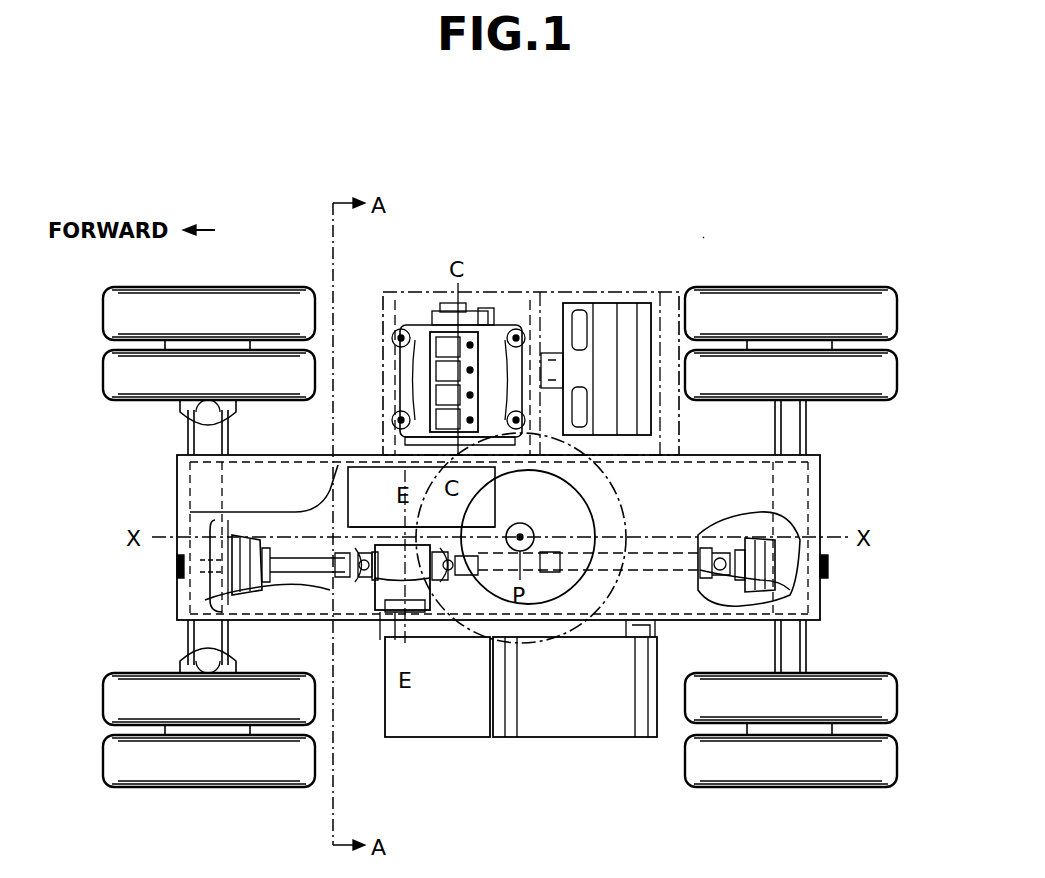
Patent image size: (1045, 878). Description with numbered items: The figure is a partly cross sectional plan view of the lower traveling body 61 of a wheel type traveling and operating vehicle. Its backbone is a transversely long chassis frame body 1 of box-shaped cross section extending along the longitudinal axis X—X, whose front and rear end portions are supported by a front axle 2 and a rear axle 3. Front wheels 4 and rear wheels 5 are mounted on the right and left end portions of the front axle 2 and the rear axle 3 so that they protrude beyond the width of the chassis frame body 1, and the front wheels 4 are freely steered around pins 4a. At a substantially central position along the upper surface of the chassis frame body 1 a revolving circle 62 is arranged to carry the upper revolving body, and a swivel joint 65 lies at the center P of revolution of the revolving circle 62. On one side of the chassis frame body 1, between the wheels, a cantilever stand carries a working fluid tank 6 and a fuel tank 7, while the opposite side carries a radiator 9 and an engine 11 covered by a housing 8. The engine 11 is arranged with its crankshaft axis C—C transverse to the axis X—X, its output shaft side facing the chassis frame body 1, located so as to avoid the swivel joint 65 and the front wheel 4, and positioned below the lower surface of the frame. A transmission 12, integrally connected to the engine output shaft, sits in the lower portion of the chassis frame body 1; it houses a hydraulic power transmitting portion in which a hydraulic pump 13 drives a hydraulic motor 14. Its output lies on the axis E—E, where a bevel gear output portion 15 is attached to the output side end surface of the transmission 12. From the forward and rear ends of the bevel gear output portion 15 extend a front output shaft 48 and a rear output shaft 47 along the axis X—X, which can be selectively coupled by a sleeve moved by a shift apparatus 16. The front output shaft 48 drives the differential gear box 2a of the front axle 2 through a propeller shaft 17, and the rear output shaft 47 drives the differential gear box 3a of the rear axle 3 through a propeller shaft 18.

The chassis frame body 1 is at (178, 500).
The front axle 2 is at (190, 435).
The differential gear box 2a is at (182, 572).
The rear axle 3 is at (800, 412).
The differential gear box 3a is at (818, 575).
The front wheels 4 is at (222, 300).
The pins 4a is at (228, 412).
The rear wheels 5 is at (787, 300).
The working fluid tank 6 is at (443, 737).
The fuel tank 7 is at (570, 737).
The housing 8 is at (512, 293).
The radiator 9 is at (606, 302).
The engine 11 is at (442, 340).
The transmission 12 is at (378, 466).
The hydraulic pump 13 is at (482, 530).
The hydraulic motor 14 is at (375, 527).
The bevel gear output portion 15 is at (390, 640).
The shift apparatus 16 is at (414, 612).
The propeller shaft 17 is at (300, 598).
The propeller shaft 18 is at (660, 600).
The rear output shaft 47 is at (452, 585).
The front output shaft 48 is at (355, 610).
The lower traveling body 61 is at (703, 238).
The revolving circle 62 is at (628, 505).
The swivel joint 65 is at (530, 528).